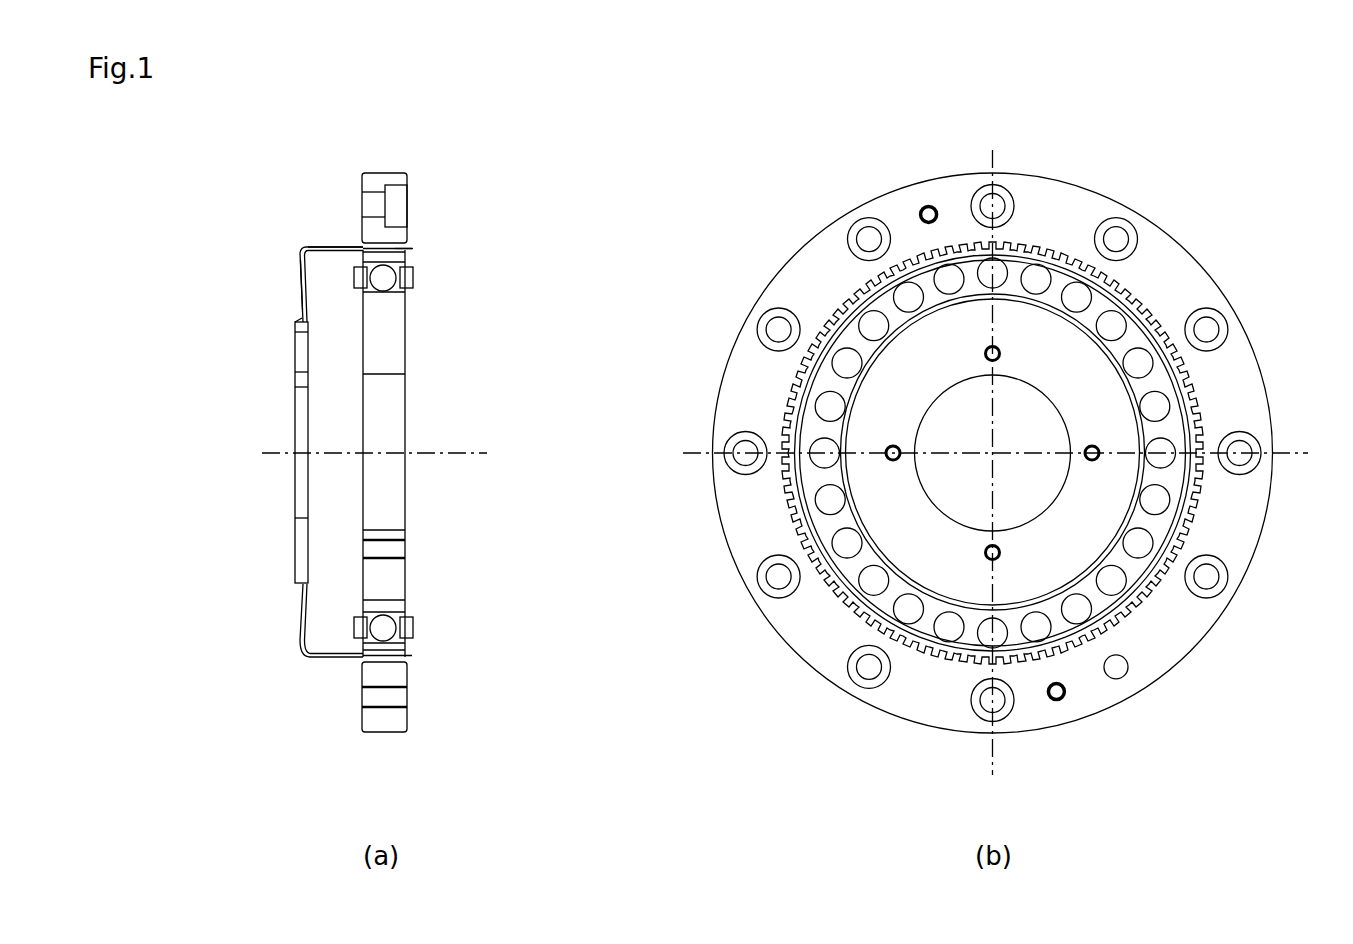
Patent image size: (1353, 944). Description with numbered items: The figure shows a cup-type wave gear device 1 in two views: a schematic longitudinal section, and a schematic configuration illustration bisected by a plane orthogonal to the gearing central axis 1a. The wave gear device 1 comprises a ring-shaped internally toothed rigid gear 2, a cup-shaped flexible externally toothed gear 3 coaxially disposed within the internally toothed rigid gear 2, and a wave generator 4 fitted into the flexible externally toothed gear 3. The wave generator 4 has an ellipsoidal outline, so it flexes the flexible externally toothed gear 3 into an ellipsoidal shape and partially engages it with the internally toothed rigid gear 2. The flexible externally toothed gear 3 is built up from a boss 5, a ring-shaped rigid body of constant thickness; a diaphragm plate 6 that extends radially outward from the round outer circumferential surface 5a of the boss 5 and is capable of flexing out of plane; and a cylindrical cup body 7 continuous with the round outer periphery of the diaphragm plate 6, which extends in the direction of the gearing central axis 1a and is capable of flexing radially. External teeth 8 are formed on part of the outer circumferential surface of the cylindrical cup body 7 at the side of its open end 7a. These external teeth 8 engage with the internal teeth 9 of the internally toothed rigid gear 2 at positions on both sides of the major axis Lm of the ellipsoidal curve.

The cup-type wave gear device 1 is at (412, 143).
The gearing central axis 1a is at (445, 453).
The internally toothed rigid gear 2 is at (418, 232).
The flexible externally toothed gear 3 is at (294, 234).
The wave generator 4 is at (434, 349).
The boss 5 is at (295, 333).
The round outer circumferential surface 5a is at (301, 314).
The diaphragm plate 6 is at (300, 283).
The cylindrical cup body 7 is at (335, 244).
The open end 7a is at (411, 249).
The external teeth 8 is at (391, 284).
The internal teeth 9 is at (400, 284).
The major axis Lm is at (993, 322).